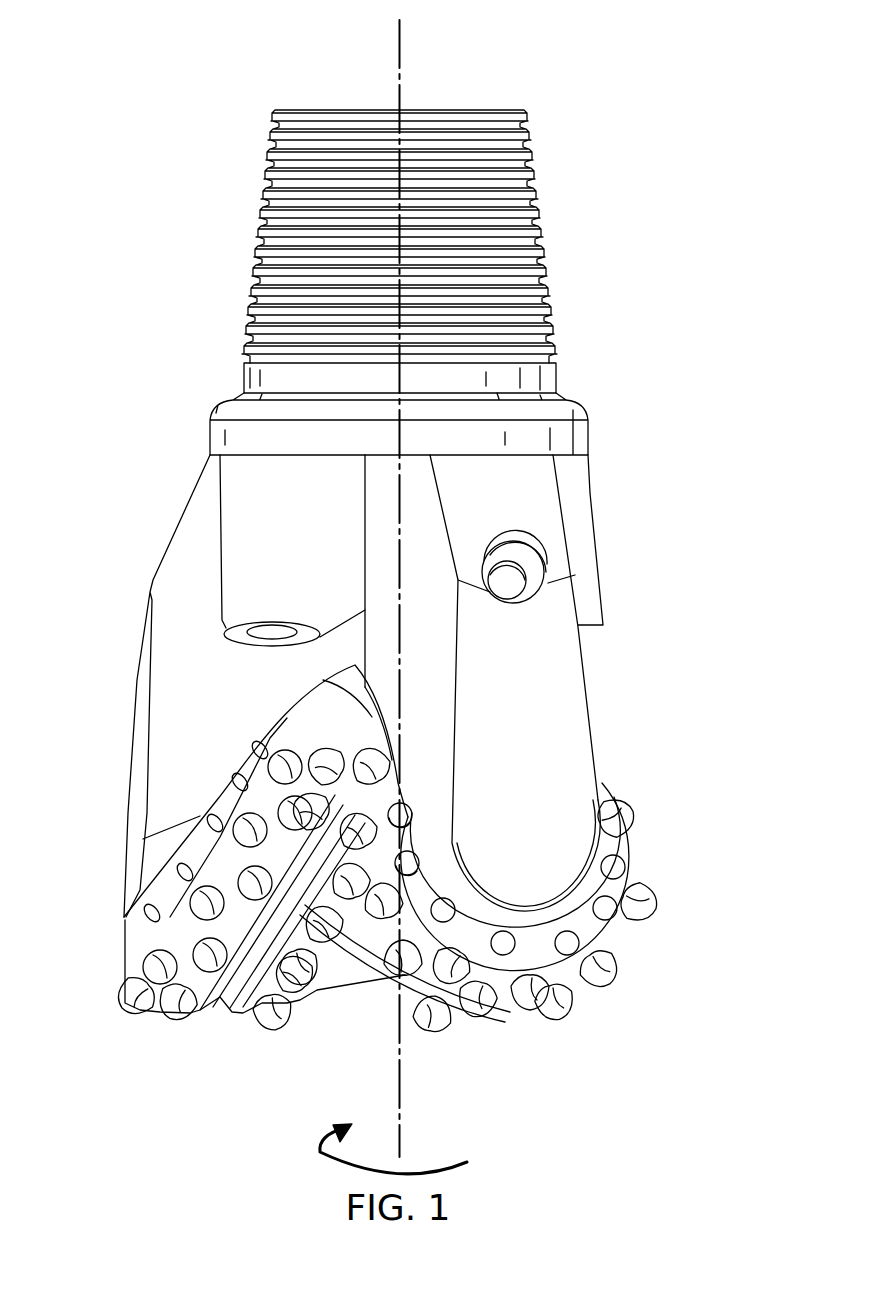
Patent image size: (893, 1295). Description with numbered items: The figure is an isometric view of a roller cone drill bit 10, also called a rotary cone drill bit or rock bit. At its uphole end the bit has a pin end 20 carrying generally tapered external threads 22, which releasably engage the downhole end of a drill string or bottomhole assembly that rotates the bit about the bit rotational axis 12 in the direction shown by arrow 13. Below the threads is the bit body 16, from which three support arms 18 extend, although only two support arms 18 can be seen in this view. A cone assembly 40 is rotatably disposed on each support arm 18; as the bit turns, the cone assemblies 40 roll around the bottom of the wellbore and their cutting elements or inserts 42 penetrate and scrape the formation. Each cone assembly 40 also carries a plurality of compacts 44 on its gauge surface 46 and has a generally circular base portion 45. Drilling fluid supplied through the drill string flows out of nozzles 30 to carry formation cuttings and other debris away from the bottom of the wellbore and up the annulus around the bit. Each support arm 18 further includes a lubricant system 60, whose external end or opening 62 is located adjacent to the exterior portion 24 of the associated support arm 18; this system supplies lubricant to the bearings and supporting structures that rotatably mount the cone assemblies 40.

The roller cone drill bit 10 is at (702, 505).
The bit rotational axis 12 is at (398, 32).
The arrow 13 is at (318, 1150).
The bit body 16 is at (369, 655).
The support arms 18 is at (132, 673).
The pin end 20 is at (412, 251).
The external threads 22 is at (262, 197).
The exterior portion of support arm 24 is at (533, 729).
The nozzles 30 is at (272, 632).
The cone assemblies 40 is at (376, 882).
The cutting elements or inserts 42 is at (133, 1010).
The compacts 44 is at (239, 779).
The circular base portion 45 is at (487, 908).
The gauge surface 46 is at (164, 893).
The lubricant system 60 is at (566, 551).
The external end or opening 62 is at (545, 562).